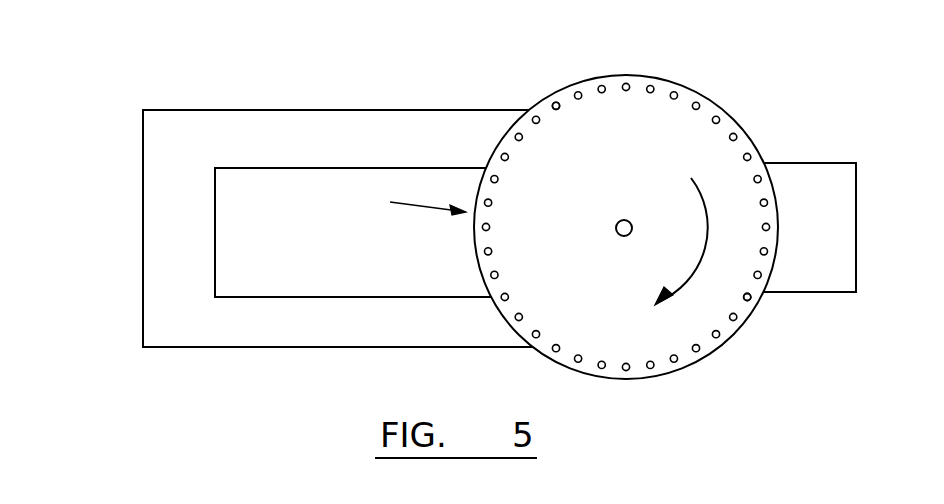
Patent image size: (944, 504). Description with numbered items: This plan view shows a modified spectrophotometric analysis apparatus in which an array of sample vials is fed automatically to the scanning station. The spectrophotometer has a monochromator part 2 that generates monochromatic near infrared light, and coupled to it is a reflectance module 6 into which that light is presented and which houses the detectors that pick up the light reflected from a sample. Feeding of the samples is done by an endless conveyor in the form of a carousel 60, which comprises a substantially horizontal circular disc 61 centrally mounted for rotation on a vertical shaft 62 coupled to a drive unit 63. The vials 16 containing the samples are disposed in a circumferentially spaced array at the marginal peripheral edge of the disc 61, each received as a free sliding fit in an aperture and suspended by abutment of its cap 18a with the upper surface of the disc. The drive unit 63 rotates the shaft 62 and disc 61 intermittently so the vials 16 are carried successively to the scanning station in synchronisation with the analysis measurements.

The monochromator part 2 is at (168, 230).
The reflectance module 6 is at (297, 245).
The vial 16 is at (523, 138).
The cap 18a is at (553, 102).
The carousel 60 is at (411, 200).
The circular disc 61 is at (568, 241).
The vertical shaft 62 is at (626, 237).
The drive unit 63 is at (829, 233).